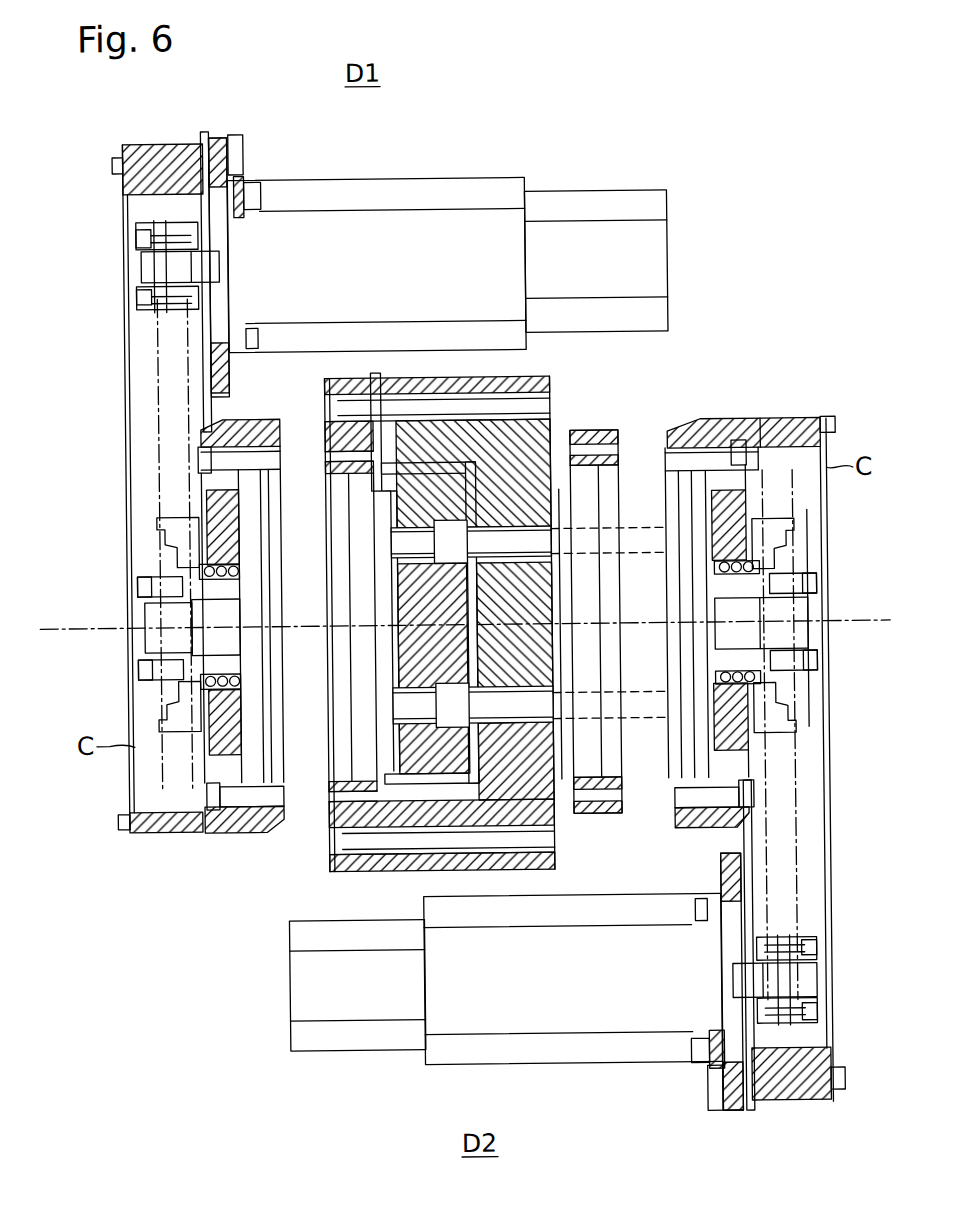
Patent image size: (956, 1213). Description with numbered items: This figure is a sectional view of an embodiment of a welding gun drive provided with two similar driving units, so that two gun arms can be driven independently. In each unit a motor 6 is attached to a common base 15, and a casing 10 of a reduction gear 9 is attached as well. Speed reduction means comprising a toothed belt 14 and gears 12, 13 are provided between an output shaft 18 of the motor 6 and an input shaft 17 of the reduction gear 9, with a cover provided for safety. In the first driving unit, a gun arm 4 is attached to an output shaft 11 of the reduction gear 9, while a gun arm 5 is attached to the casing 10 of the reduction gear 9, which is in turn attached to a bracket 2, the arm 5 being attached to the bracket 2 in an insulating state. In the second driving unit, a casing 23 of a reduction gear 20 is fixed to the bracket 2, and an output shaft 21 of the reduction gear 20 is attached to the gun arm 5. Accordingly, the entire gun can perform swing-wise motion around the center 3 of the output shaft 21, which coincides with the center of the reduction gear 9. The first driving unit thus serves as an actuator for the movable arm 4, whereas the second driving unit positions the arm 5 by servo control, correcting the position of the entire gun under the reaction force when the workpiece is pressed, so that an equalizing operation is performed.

The bracket 2 is at (568, 510).
The center 3 is at (95, 625).
The gun arm 4 is at (455, 520).
The gun arm 5 is at (458, 820).
The motor 6 is at (355, 225).
The reduction gear 9 is at (296, 700).
The casing 10 is at (305, 690).
The output shaft 11 is at (385, 520).
The gear 12 is at (160, 528).
The gear 13 is at (180, 305).
The toothed belt 14 is at (140, 420).
The common base 15 is at (160, 158).
The input shaft 17 is at (165, 625).
The output shaft 18 is at (170, 265).
The reduction gear 20 is at (650, 680).
The output shaft 21 is at (578, 490).
The casing 23 is at (655, 680).